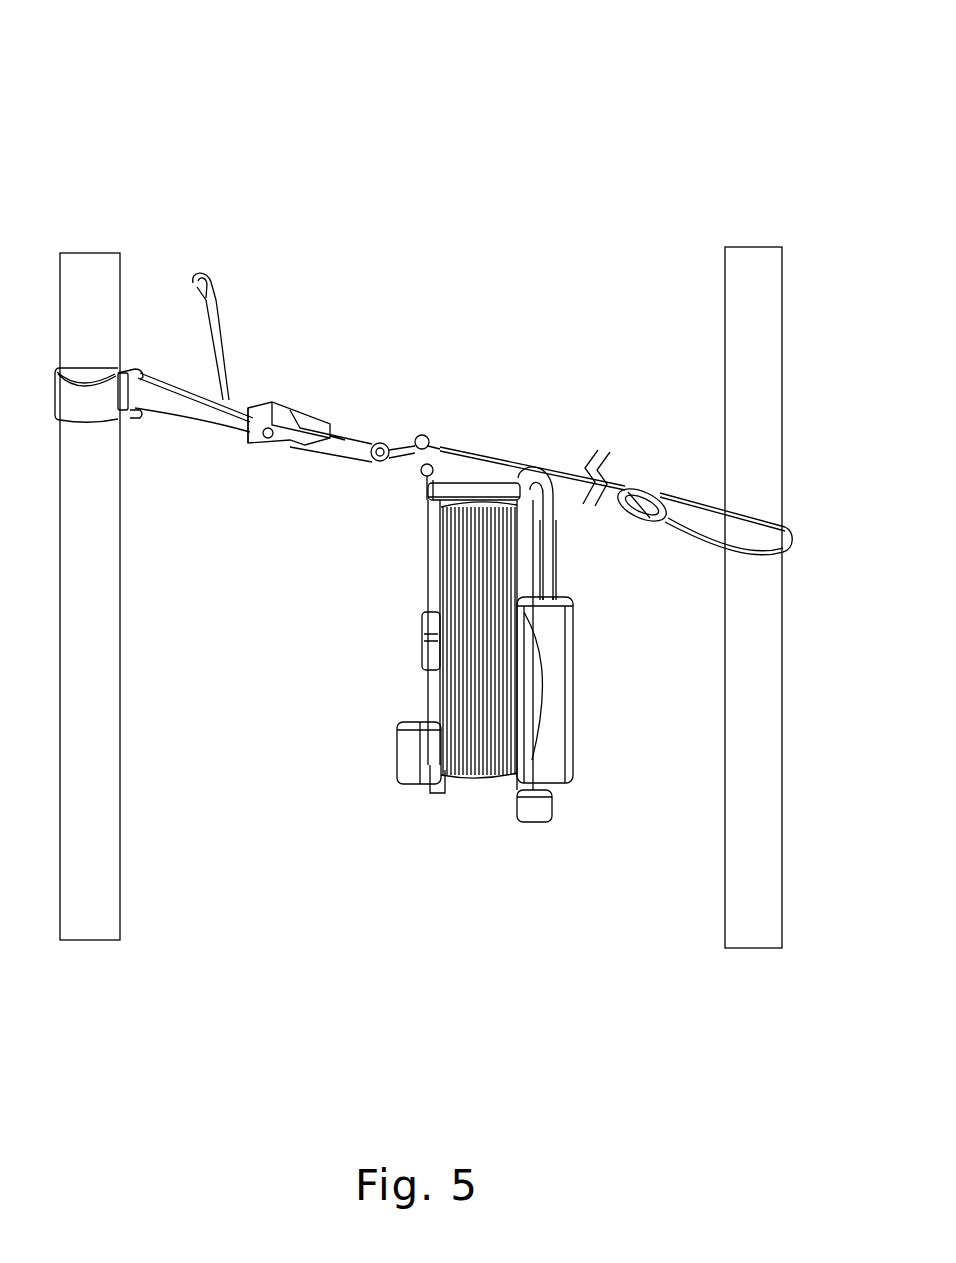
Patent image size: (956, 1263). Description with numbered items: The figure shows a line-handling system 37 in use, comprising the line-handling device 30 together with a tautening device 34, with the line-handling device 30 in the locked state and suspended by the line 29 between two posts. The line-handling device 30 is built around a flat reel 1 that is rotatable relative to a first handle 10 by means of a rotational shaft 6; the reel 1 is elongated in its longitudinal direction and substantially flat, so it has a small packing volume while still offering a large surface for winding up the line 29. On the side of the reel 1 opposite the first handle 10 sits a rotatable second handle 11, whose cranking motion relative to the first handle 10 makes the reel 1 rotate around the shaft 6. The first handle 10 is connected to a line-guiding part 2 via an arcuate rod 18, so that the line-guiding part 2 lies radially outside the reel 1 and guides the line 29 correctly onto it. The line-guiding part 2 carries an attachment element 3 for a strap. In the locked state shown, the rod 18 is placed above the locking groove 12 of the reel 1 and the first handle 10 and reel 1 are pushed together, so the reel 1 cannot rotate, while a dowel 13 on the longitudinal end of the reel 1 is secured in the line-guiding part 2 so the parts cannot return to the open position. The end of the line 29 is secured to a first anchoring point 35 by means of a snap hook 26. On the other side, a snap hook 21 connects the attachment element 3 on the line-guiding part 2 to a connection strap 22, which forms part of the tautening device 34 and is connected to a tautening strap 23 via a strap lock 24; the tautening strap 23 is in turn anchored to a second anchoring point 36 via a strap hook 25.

The flat reel 1 is at (528, 820).
The line-guiding part 2 is at (430, 440).
The attachment element 3 is at (425, 477).
The rotational shaft 6 is at (425, 640).
The first handle 10 is at (575, 672).
The rotatable second handle 11 is at (405, 725).
The locking groove 12 is at (553, 510).
The dowel 13 is at (440, 790).
The arcuate rod 18 is at (548, 582).
The snap hook 21 is at (385, 445).
The connection strap 22 is at (335, 445).
The tautening strap 23 is at (214, 309).
The strap lock 24 is at (300, 410).
The strap hook 25 is at (143, 415).
The snap hook 26 is at (640, 490).
The line 29 is at (535, 455).
The line-handling device 30 is at (492, 743).
The tautening device 34 is at (310, 335).
The first anchoring point 35 is at (616, 408).
The second anchoring point 36 is at (176, 315).
The line-handling system 37 is at (628, 157).